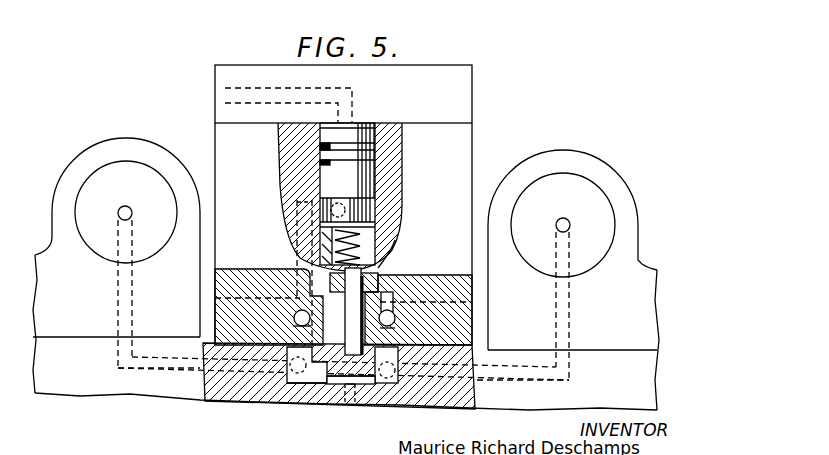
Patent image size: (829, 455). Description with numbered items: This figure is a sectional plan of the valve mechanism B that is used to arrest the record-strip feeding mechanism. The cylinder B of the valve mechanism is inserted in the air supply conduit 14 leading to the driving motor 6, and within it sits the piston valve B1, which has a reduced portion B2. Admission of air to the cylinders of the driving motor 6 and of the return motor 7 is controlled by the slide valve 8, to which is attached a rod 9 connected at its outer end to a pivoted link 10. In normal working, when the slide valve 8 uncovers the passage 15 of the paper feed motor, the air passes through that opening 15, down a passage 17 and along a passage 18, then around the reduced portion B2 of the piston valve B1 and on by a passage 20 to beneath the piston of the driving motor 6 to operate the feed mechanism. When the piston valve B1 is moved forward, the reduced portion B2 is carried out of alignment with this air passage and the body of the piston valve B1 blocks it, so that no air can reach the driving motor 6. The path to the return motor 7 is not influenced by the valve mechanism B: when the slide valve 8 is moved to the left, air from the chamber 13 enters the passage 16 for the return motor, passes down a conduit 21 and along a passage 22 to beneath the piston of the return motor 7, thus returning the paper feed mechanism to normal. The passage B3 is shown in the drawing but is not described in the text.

The driving motor 6 is at (114, 178).
The return motor 7 is at (572, 188).
The slide valve 8 is at (328, 378).
The rod 9 is at (357, 348).
The pivoted link 10 is at (387, 270).
The chamber 13 is at (305, 378).
The air supply conduit 14 is at (358, 402).
The passage of the paper feed motor 15 is at (295, 330).
The passage for the return motor 16 is at (393, 337).
The passage 17 is at (297, 316).
The passage 18 is at (298, 202).
The passage 20 is at (145, 372).
The conduit 21 is at (395, 306).
The passage 22 is at (520, 385).
The valve mechanism B is at (356, 237).
The piston valve B1 is at (343, 172).
The reduced portion of the piston B2 is at (378, 203).
The inlet passage B3 is at (238, 86).